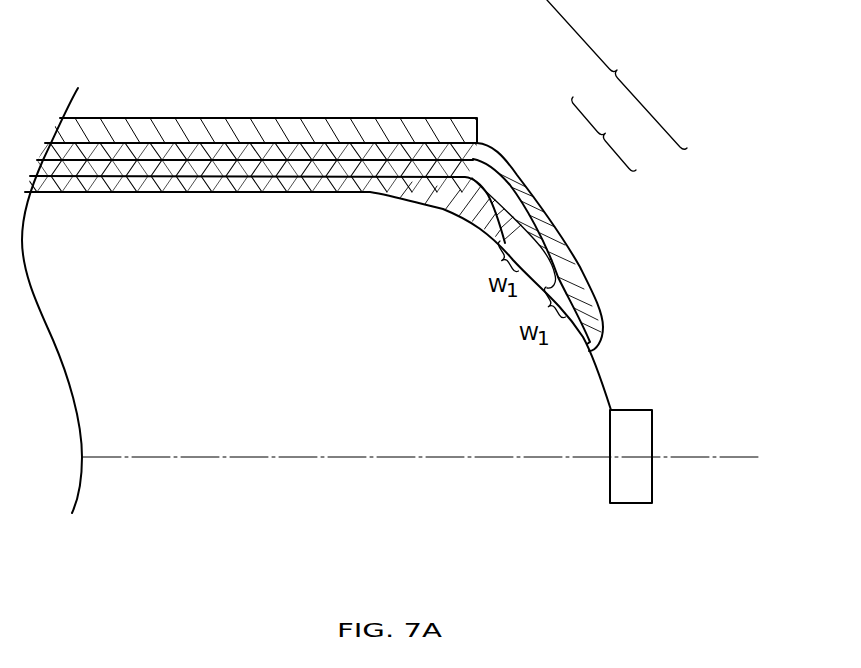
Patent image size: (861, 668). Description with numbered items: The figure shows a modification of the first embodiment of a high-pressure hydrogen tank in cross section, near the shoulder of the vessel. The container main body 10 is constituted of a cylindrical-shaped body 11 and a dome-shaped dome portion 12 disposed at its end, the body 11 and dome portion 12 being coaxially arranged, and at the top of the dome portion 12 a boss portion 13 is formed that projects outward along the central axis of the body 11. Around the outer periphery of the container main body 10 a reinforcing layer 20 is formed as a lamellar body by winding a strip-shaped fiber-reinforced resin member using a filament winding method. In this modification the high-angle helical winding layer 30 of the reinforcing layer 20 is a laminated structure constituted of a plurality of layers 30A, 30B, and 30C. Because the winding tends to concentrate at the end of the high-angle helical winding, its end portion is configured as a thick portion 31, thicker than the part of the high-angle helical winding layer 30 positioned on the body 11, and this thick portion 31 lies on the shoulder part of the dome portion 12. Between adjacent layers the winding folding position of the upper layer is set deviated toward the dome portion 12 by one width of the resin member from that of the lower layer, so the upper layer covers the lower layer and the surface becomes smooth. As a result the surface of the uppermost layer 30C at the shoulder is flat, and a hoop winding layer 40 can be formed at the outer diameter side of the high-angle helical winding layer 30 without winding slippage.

The container main body 10 is at (680, 430).
The body 11 is at (233, 175).
The dome portion 12 is at (597, 308).
The boss portion 13 is at (652, 483).
The reinforcing layer 20 is at (616, 74).
The high-angle helical winding layer 30 is at (606, 134).
The layer 30A is at (508, 158).
The layer 30B is at (528, 200).
The uppermost layer 30C is at (548, 210).
The thick portion 31 is at (445, 176).
The hoop winding layer 40 is at (478, 110).